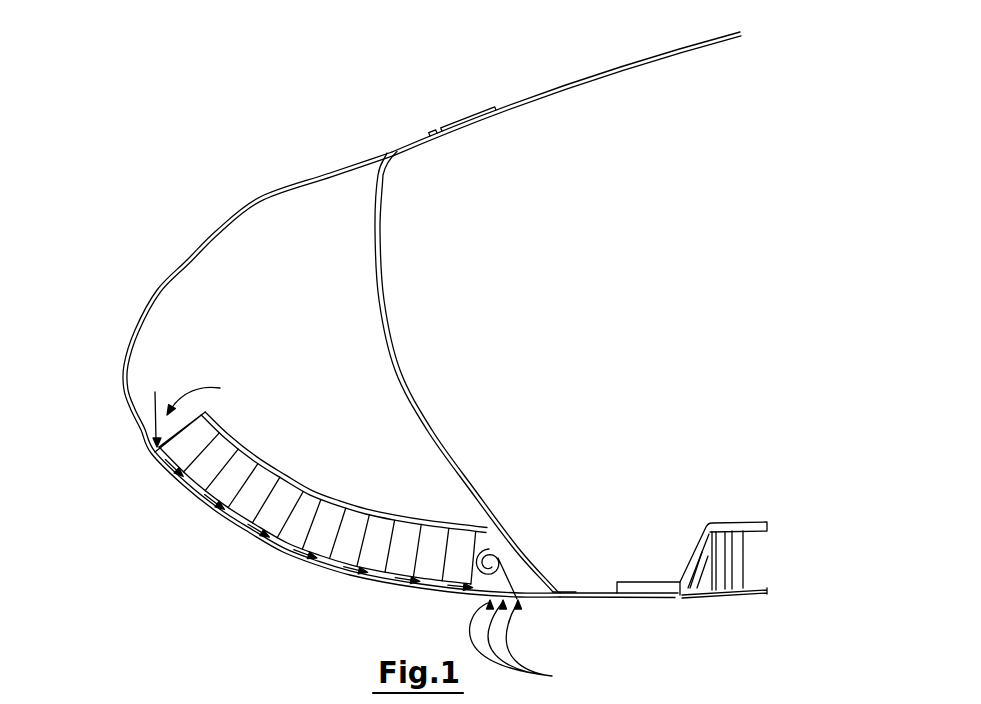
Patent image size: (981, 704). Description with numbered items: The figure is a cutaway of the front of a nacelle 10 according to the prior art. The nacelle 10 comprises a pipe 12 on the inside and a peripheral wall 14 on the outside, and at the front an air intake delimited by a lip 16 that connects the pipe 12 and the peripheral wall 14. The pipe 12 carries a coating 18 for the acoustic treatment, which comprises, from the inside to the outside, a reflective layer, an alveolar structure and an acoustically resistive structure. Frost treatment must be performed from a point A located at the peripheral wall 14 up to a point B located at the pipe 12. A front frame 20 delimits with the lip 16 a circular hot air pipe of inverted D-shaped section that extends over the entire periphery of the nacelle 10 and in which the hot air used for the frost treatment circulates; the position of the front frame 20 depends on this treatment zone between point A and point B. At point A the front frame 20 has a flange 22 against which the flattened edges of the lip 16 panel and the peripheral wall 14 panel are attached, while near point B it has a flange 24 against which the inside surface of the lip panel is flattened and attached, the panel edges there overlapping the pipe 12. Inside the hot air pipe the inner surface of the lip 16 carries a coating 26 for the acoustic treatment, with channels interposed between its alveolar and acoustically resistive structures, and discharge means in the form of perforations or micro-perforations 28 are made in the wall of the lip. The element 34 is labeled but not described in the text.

The nacelle 10 is at (520, 79).
The pipe 12 is at (634, 604).
The peripheral wall 14 is at (453, 124).
The lip 16 is at (122, 372).
The coating for the acoustic treatment 18 is at (718, 538).
The front frame 20 is at (403, 385).
The flange 22 is at (413, 149).
The flange 24 is at (570, 590).
The coating for the acoustic treatment 26 is at (307, 483).
The perforations or micro-perforations 28 is at (530, 622).
The support structure 34 is at (668, 703).
The point A is at (387, 150).
The point B is at (552, 600).